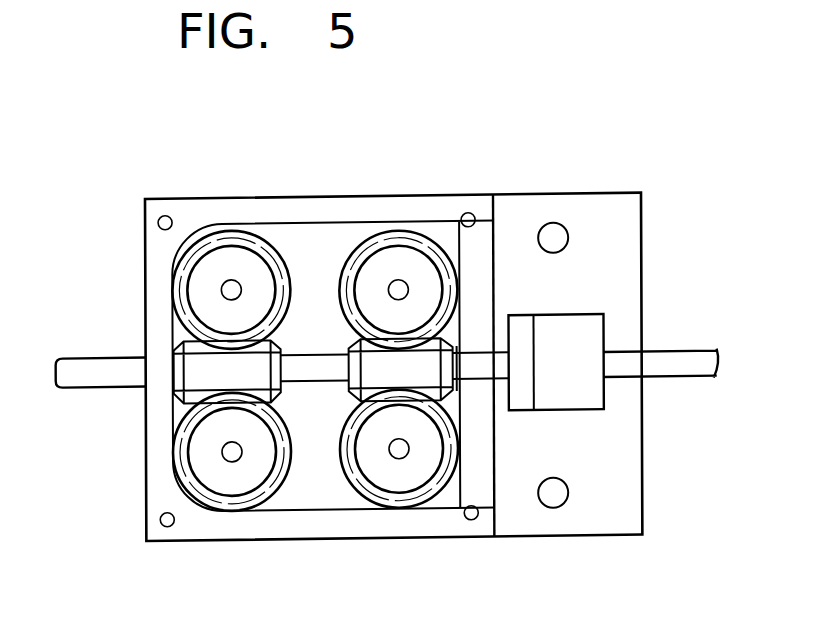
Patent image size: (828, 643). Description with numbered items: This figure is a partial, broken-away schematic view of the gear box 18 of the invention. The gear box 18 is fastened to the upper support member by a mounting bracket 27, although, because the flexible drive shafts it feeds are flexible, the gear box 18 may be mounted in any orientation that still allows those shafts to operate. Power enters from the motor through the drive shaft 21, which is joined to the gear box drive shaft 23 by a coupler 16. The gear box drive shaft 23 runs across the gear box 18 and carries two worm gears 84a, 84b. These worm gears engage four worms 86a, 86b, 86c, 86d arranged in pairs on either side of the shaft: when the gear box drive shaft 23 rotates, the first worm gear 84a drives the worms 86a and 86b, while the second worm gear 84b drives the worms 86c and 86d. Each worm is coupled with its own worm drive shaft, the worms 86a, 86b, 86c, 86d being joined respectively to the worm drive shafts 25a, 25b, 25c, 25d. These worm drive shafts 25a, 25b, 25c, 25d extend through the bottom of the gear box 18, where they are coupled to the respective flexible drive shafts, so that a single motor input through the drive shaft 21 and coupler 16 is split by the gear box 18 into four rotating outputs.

The coupler 16 is at (592, 338).
The gear box 18 is at (485, 272).
The drive shaft 21 is at (671, 377).
The gear box drive shaft 23 is at (82, 371).
The worm drive shaft 25a is at (225, 291).
The worm drive shaft 25b is at (225, 456).
The worm drive shaft 25c is at (400, 288).
The worm drive shaft 25d is at (391, 455).
The mounting bracket 27 is at (599, 526).
The worm gear 84a is at (207, 383).
The worm gear 84b is at (429, 367).
The worm 86a is at (238, 233).
The worm 86b is at (222, 511).
The worm 86c is at (378, 235).
The worm 86d is at (419, 512).